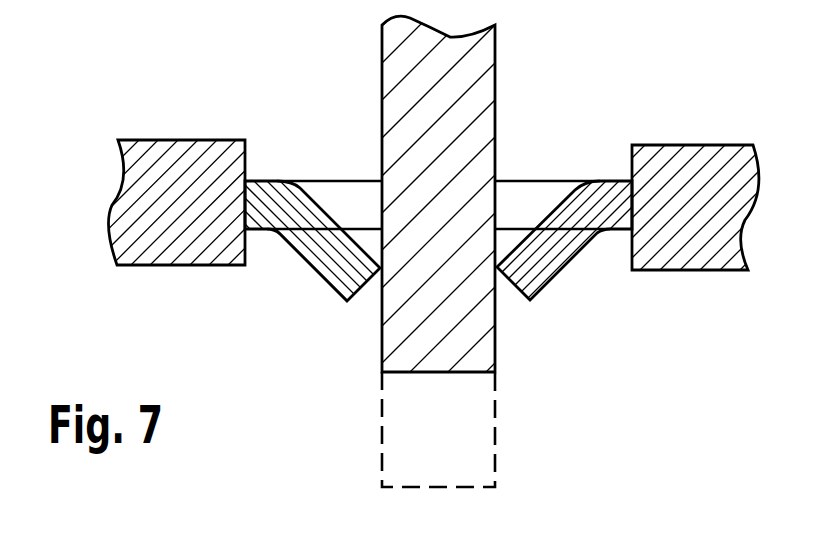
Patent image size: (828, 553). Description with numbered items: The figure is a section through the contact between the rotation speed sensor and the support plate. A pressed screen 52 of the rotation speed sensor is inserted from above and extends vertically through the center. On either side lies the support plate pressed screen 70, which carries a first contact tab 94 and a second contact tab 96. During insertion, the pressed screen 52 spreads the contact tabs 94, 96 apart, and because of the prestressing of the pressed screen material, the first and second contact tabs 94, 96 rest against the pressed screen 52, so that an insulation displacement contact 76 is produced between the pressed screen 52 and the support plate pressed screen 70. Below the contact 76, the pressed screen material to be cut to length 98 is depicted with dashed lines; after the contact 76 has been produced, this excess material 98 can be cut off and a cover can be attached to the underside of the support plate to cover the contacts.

The support plate pressed screen 70 is at (181, 188).
The pressed screen 52 is at (422, 80).
The insulation displacement contact 76 is at (558, 109).
The first contact tab 94 is at (337, 255).
The second contact tab 96 is at (537, 260).
The pressed screen material to be cut to length 98 is at (504, 373).